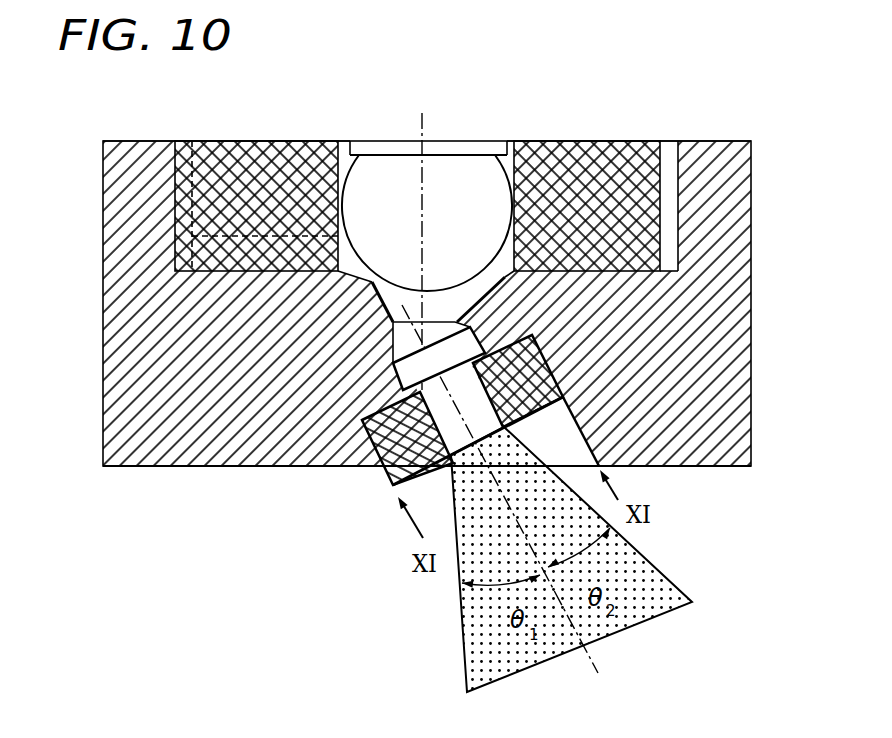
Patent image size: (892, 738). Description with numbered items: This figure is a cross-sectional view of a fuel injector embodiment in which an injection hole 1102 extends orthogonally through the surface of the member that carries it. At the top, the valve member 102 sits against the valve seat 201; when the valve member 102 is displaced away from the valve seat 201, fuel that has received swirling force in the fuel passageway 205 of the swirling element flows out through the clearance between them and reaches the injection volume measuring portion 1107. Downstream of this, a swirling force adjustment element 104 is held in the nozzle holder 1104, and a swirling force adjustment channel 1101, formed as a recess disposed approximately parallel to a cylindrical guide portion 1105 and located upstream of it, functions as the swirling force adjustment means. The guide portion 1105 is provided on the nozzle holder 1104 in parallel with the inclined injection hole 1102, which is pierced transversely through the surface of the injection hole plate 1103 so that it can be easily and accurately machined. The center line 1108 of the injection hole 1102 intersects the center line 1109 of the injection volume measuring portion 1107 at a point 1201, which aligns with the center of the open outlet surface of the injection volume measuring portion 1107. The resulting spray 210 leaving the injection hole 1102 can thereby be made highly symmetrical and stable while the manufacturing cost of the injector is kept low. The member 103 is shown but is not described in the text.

The valve member 102 is at (488, 205).
The valve seat member 103 is at (587, 247).
The swirling force adjustment element 104 is at (600, 341).
The valve seat 201 is at (523, 277).
The fuel passageway 205 is at (227, 232).
The spray 210 is at (462, 613).
The swirling force adjustment channel 1101 is at (395, 368).
The injection hole 1102 is at (393, 480).
The injection hole plate 1103 is at (558, 383).
The nozzle holder 1104 is at (222, 468).
The guide portion 1105 is at (567, 435).
The injection volume measuring portion 1107 is at (393, 325).
The center line of the injection hole 1108 is at (335, 466).
The center line of the injection volume measuring portion 1109 is at (422, 150).
The intersection point 1201 is at (412, 352).